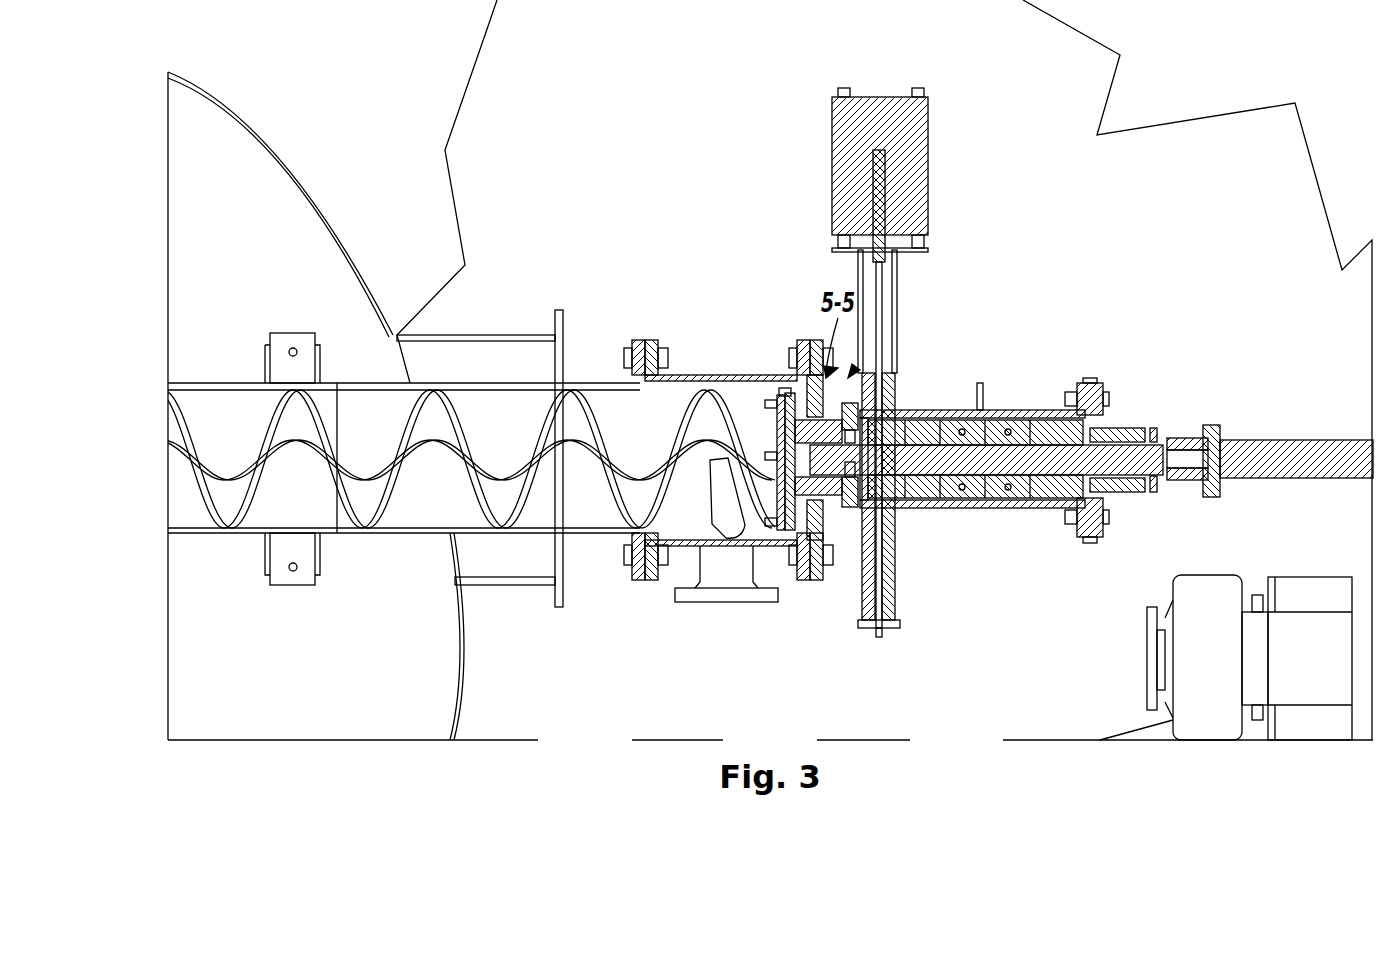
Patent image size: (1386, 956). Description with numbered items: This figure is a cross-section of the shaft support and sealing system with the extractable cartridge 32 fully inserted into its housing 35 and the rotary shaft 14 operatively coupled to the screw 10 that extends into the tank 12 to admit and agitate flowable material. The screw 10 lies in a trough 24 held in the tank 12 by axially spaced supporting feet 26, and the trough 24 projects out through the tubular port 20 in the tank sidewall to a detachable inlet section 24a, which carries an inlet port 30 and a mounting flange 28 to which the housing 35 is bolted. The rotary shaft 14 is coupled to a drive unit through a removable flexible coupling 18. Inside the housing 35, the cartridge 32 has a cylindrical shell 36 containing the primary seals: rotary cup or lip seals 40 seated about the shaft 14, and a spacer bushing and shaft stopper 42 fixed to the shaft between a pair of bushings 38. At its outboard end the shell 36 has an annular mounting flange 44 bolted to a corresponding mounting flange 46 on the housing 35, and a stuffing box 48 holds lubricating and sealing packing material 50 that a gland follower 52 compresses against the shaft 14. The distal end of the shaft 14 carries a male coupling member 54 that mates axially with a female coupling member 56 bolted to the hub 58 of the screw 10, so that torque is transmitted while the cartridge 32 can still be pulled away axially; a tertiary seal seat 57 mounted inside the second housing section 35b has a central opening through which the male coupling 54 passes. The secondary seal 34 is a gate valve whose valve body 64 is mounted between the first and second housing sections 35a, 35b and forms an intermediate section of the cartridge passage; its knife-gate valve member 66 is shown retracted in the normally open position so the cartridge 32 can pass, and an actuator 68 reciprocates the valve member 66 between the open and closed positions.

The screw 10 is at (322, 500).
The tank 12 is at (257, 134).
The rotary shaft 14 is at (1000, 478).
The removable flexible coupling 18 is at (1243, 434).
The tubular port 20 is at (508, 335).
The trough 24 is at (598, 385).
The detachable inlet section 24a is at (707, 372).
The supporting feet 26 is at (287, 345).
The mounting flange 28 is at (795, 356).
The inlet port 30 is at (745, 605).
The extractable cartridge 32 is at (1112, 392).
The secondary seal 34 is at (835, 68).
The housing 35 is at (992, 388).
The first housing section 35a is at (1025, 412).
The second housing section 35b is at (822, 370).
The cylindrical shell 36 is at (1076, 392).
The bushings 38 is at (944, 420).
The rotary cup or lip seals 40 is at (905, 500).
The spacer bushing and shaft stopper 42 is at (980, 505).
The annular mounting flange 44 is at (1105, 525).
The mounting flange 46 is at (1083, 537).
The stuffing box 48 is at (1130, 428).
The lubricating and sealing packing material 50 is at (1130, 492).
The gland follower 52 is at (1157, 428).
The coupling member 54 is at (835, 530).
The coupling member 56 is at (782, 535).
The tertiary seal seat 57 is at (850, 520).
The hub 58 is at (762, 480).
The valve body 64 is at (893, 372).
The valve member 66 is at (885, 290).
The actuator 68 is at (908, 140).